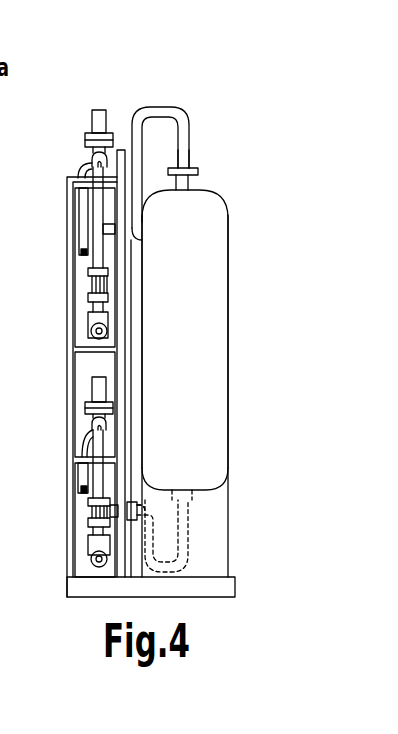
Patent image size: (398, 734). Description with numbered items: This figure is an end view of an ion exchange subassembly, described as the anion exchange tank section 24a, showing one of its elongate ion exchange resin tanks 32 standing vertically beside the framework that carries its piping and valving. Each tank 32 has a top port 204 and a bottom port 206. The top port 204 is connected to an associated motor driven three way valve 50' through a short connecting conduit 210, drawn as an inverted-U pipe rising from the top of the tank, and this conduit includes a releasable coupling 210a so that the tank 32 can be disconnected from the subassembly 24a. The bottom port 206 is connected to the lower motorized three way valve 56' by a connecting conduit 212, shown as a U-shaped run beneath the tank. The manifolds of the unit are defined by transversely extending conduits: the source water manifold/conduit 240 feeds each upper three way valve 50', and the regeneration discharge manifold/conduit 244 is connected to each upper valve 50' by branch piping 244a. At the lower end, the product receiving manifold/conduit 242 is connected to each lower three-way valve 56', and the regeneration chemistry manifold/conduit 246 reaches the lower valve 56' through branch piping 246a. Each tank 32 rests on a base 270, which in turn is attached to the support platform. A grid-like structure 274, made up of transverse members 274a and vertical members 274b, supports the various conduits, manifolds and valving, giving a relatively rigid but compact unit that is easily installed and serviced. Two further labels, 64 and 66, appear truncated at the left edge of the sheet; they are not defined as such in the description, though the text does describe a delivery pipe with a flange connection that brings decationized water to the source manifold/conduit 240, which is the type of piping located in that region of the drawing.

The anion exchange tank section 24a is at (207, 118).
The ion exchange resin tank 32 is at (188, 347).
The motor driven three way valve 50' is at (90, 141).
The lower motorized three way valve 56' is at (71, 433).
The coupling 64 is at (51, 337).
The coupling 66 is at (54, 285).
The top port 204 is at (199, 171).
The bottom port 206 is at (195, 508).
The connecting conduit 210 is at (162, 112).
The releasable coupling 210a is at (188, 162).
The connecting conduit 212 is at (187, 542).
The source water manifold/conduit 240 is at (92, 343).
The product receiving manifold/conduit 242 is at (100, 563).
The regeneration discharge manifold/conduit 244 is at (85, 256).
The branch piping 244a is at (88, 223).
The regeneration chemistry manifold/conduit 246 is at (88, 492).
The branch piping 246a is at (80, 477).
The base 270 is at (228, 515).
The grid-like structure 274 is at (71, 165).
The transverse members 274a is at (112, 458).
The vertical members 274b is at (72, 523).